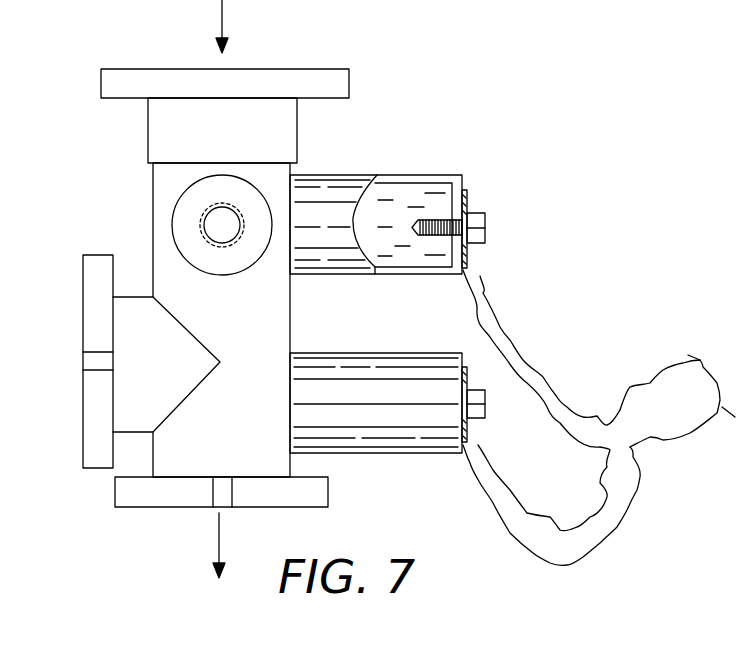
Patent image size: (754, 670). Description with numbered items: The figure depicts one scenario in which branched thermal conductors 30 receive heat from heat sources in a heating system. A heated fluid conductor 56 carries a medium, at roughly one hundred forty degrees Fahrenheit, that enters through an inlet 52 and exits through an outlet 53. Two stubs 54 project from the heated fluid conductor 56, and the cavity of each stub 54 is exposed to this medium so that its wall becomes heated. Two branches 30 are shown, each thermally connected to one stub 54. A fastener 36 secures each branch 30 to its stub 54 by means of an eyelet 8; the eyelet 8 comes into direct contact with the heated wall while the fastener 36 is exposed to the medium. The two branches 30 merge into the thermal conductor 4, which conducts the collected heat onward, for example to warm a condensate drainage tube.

The thermal conductor 4 is at (670, 370).
The eyelet 8 is at (466, 182).
The branch thermal conductor 30 is at (547, 372).
The fastener 36 is at (485, 222).
The inlet 52 is at (233, 69).
The outlet 53 is at (200, 507).
The stub 54 is at (177, 200).
The heated fluid conductor 56 is at (290, 309).